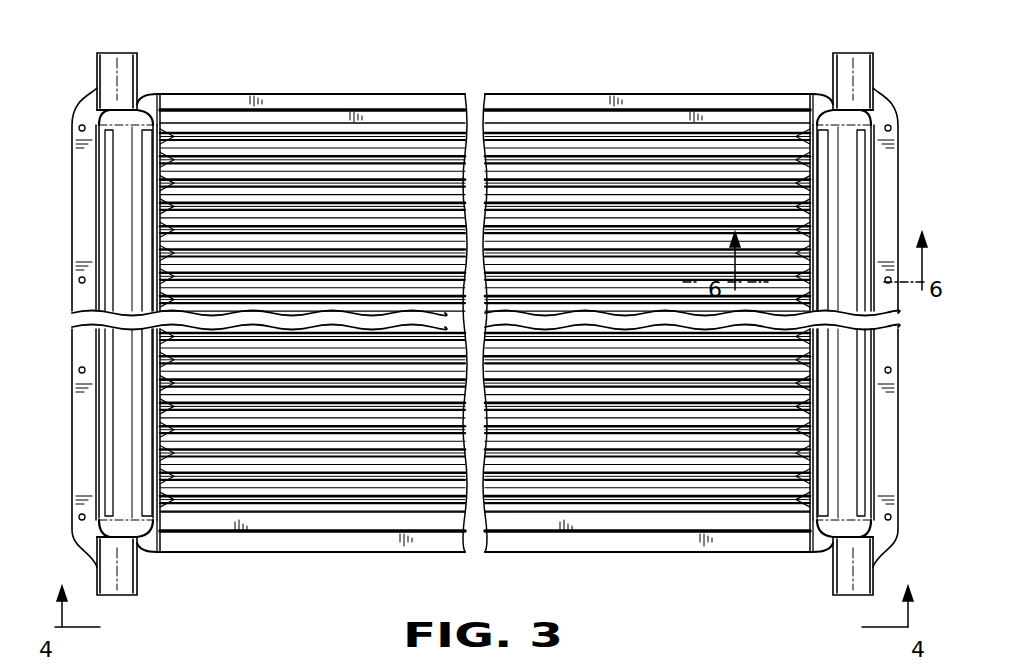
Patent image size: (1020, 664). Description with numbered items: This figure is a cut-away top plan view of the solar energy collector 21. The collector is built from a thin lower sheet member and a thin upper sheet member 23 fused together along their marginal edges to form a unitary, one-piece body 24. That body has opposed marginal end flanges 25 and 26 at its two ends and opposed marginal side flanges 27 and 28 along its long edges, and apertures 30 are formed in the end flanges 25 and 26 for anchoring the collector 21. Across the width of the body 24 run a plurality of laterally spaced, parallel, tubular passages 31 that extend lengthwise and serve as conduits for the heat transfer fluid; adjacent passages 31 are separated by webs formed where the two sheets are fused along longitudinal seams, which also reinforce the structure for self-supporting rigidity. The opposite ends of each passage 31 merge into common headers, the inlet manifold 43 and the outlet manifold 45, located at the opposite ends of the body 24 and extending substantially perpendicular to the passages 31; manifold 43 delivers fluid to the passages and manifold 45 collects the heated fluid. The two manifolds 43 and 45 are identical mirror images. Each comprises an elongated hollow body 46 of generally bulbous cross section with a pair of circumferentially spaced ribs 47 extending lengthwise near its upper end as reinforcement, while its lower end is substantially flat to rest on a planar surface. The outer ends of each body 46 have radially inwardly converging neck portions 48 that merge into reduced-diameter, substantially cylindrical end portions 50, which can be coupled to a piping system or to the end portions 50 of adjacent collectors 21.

The solar energy collector 21 is at (486, 328).
The upper sheet member 23 is at (283, 117).
The body 24 is at (508, 90).
The marginal end flange 25 is at (78, 477).
The marginal end flange 26 is at (893, 153).
The marginal side flange 27 is at (384, 95).
The marginal side flange 28 is at (325, 543).
The apertures 30 is at (80, 367).
The tubular passages 31 is at (598, 465).
The inlet manifold 43 is at (886, 416).
The outlet manifold 45 is at (96, 396).
The hollow body 46 is at (125, 197).
The ribs 47 is at (110, 140).
The neck portions 48 is at (100, 118).
The end portions 50 is at (112, 70).